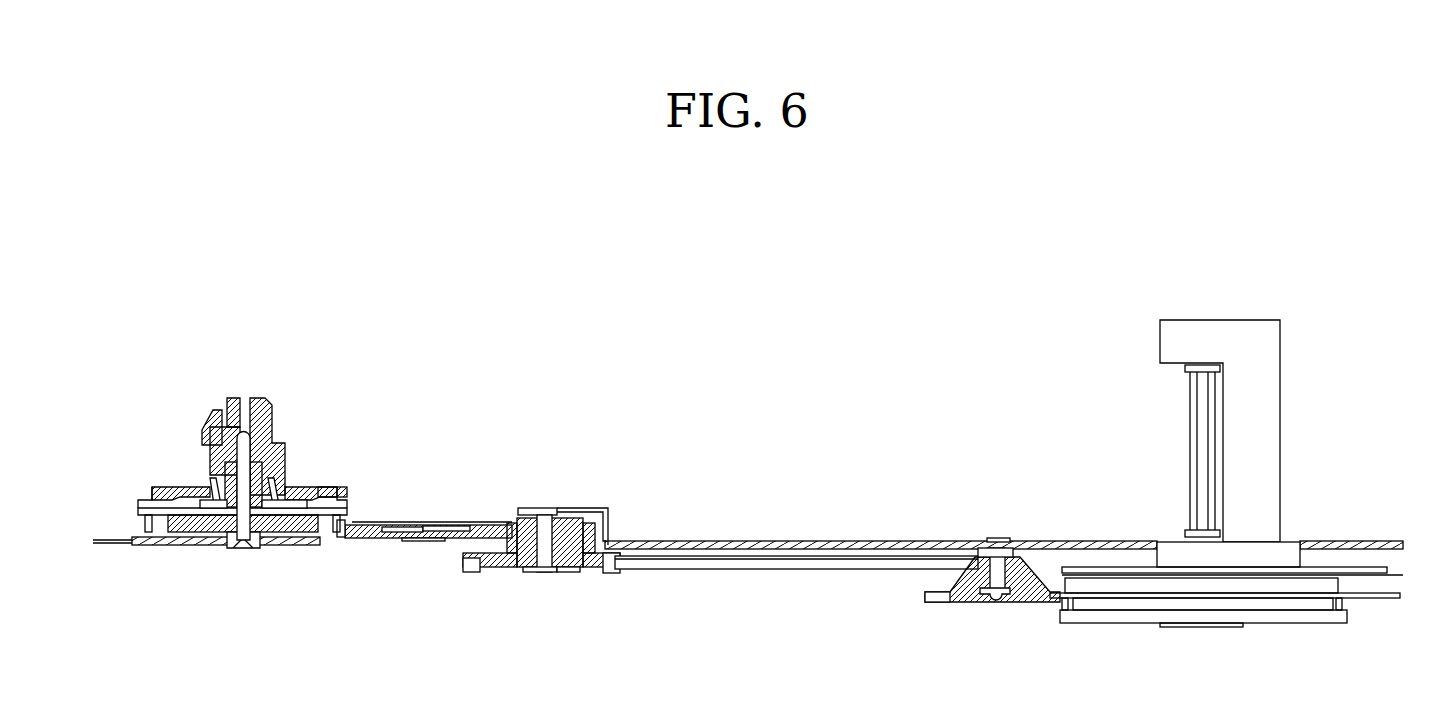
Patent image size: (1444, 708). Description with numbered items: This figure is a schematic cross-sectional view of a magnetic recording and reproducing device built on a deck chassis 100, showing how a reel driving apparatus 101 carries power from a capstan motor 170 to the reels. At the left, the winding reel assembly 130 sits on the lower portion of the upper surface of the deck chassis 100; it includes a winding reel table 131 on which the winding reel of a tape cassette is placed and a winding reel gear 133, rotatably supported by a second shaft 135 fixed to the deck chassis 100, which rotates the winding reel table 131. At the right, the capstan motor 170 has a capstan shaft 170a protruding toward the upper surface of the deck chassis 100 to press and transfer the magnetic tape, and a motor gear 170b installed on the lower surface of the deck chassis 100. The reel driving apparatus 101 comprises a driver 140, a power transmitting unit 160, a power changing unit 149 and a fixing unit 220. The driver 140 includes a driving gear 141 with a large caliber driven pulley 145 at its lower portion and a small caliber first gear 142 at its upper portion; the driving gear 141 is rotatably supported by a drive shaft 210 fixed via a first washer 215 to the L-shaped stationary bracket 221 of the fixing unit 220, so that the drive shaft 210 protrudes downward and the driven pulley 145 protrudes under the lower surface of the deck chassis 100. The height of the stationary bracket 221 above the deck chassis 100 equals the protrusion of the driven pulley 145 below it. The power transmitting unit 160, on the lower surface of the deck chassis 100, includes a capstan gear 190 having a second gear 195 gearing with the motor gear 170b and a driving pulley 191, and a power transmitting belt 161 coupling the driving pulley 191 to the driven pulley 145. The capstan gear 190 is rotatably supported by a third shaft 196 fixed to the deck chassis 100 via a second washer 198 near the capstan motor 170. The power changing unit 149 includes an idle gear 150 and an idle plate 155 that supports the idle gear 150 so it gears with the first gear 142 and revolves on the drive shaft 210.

The deck chassis 100 is at (740, 541).
The reel driving apparatus 101 is at (531, 366).
The winding reel assembly 130 is at (220, 437).
The winding reel table 131 is at (212, 420).
The winding reel gear 133 is at (318, 490).
The second shaft 135 is at (242, 437).
The driver 140 is at (545, 587).
The driving gear 141 is at (483, 581).
The first gear 142 is at (589, 523).
The driven pulley 145 is at (613, 575).
The power changing unit 149 is at (424, 484).
The idle gear 150 is at (376, 528).
The idle plate 155 is at (440, 527).
The power transmitting unit 160 is at (796, 626).
The power transmitting belt 161 is at (796, 591).
The capstan motor 170 is at (1238, 473).
The capstan shaft 170a is at (1195, 415).
The motor gear 170b is at (1345, 600).
The capstan gear 190 is at (954, 573).
The driving pulley 191 is at (978, 546).
The second gear 195 is at (925, 596).
The third shaft 196 is at (998, 550).
The second washer 198 is at (1012, 598).
The drive shaft 210 is at (568, 572).
The first washer 215 is at (533, 572).
The fixing unit 220 is at (612, 503).
The stationary bracket 221 is at (568, 507).